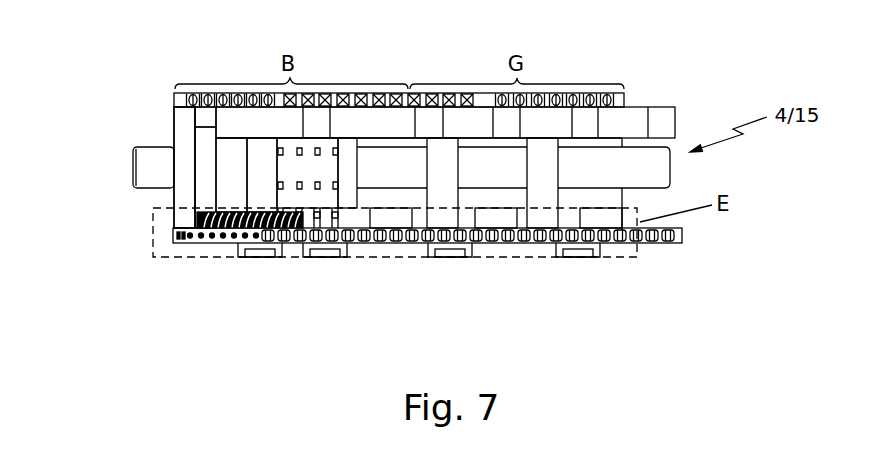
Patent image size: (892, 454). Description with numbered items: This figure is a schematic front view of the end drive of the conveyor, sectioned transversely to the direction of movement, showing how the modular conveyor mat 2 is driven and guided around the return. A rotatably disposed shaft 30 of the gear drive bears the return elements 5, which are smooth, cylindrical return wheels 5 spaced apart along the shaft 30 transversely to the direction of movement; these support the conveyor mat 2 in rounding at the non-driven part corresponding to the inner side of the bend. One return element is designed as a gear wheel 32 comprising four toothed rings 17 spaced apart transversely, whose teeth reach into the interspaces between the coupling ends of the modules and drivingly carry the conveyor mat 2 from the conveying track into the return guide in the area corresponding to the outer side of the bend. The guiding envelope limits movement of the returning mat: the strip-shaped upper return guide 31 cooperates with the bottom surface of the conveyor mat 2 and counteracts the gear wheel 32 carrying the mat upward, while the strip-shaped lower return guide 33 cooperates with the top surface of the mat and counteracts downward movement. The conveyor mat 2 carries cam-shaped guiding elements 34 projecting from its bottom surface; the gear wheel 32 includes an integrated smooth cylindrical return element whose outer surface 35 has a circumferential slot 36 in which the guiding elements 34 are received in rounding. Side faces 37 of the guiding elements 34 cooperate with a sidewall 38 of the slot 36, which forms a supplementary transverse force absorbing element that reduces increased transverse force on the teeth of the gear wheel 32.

The conveyor mat 2 is at (427, 95).
The return elements 5 is at (233, 193).
The toothed rings 17 is at (298, 192).
The shaft 30 is at (393, 177).
The upper return guide 31 is at (495, 218).
The gear wheel 32 is at (293, 173).
The lower return guide 33 is at (336, 250).
The guiding elements 34 is at (207, 118).
The outer surface 35 is at (229, 160).
The circumferential slot 36 is at (206, 184).
The side faces 37 is at (216, 122).
The sidewall 38 is at (215, 193).